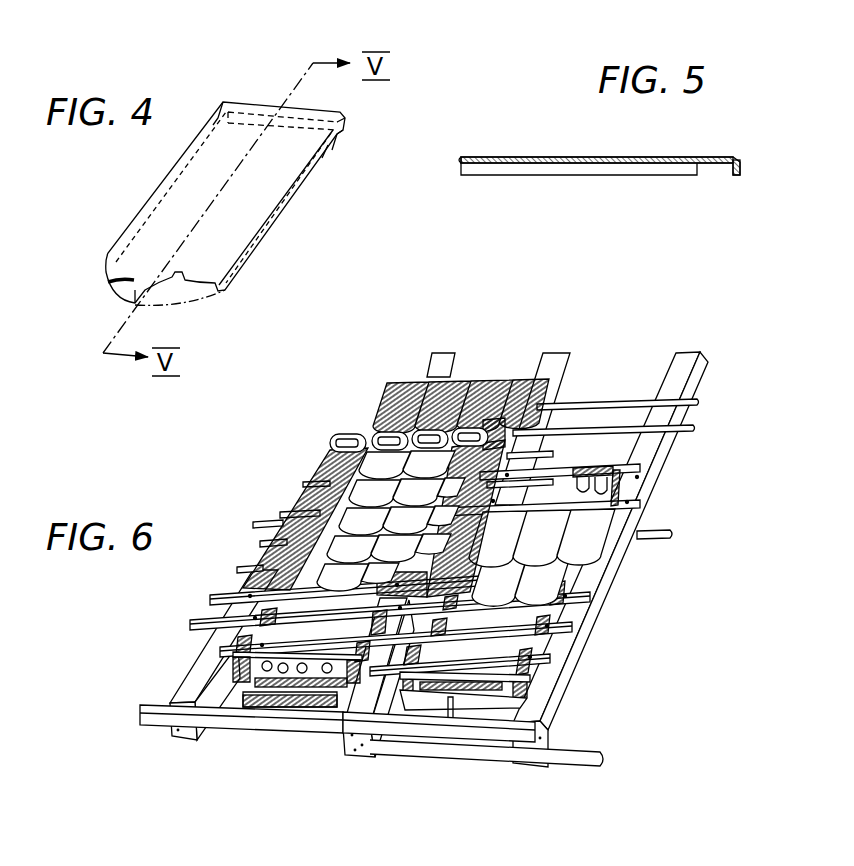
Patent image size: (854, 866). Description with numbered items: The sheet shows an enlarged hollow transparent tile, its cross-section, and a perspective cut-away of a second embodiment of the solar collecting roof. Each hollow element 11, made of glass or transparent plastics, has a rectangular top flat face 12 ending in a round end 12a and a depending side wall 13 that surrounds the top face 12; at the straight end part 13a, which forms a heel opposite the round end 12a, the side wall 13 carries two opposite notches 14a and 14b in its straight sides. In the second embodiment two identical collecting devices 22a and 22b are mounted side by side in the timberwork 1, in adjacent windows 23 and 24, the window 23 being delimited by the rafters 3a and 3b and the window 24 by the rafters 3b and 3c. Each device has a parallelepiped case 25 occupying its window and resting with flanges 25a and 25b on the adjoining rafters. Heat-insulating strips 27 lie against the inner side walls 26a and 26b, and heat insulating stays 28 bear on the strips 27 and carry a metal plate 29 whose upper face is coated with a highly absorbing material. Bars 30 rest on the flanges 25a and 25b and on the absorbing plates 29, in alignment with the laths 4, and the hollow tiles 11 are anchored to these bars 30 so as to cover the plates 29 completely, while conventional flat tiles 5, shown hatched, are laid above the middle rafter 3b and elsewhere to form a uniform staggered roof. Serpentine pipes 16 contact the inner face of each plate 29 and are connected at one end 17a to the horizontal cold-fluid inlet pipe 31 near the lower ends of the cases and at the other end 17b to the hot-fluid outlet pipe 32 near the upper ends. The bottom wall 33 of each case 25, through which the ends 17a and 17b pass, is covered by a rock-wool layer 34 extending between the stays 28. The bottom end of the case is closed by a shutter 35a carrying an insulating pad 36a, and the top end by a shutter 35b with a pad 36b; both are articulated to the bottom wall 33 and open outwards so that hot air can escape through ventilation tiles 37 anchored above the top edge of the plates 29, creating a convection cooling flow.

In FIG. 6, the timberwork 1 is at (648, 714).
In FIG. 6, the rafter 3a is at (183, 733).
In FIG. 6, the rafter 3b is at (360, 758).
In FIG. 6, the rafter 3c is at (535, 768).
In FIG. 6, the laths 4 is at (700, 435).
In FIG. 6, the flat tiles 5 is at (478, 402).
In FIG. 4, the hollow element 11 is at (296, 240).
In FIG. 5, the hollow element 11 is at (529, 146).
In FIG. 6, the hollow element 11 is at (317, 497).
In FIG. 4, the top flat face 12 is at (222, 183).
In FIG. 5, the top flat face 12 is at (602, 157).
In FIG. 4, the round end 12a is at (112, 284).
In FIG. 5, the round end 12a is at (466, 157).
In FIG. 4, the depending side wall 13 is at (252, 245).
In FIG. 5, the depending side wall 13 is at (630, 168).
In FIG. 4, the straight end part 13a is at (346, 126).
In FIG. 5, the straight end part 13a is at (737, 178).
In FIG. 4, the notch 14a is at (332, 145).
In FIG. 4, the notch 14b is at (207, 122).
In FIG. 6, the serpentine pipes 16 is at (637, 450).
In FIG. 6, the end of serpentine pipe 17a is at (410, 695).
In FIG. 6, the end of serpentine pipe 17b is at (620, 490).
In FIG. 6, the device for collecting solar energy 22a is at (283, 592).
In FIG. 6, the device for collecting solar energy 22b is at (584, 630).
In FIG. 6, the window 23 is at (276, 740).
In FIG. 6, the window 24 is at (495, 722).
In FIG. 6, the case 25 is at (230, 682).
In FIG. 6, the flange 25a is at (565, 632).
In FIG. 6, the flange 25b is at (580, 678).
In FIG. 6, the inner side wall 26a is at (233, 655).
In FIG. 6, the inner side wall 26b is at (347, 722).
In FIG. 6, the strips 27 is at (582, 602).
In FIG. 6, the heat insulating stays 28 is at (263, 668).
In FIG. 6, the metal plate 29 is at (557, 503).
In FIG. 6, the bars 30 is at (555, 662).
In FIG. 6, the inlet pipe 31 is at (600, 762).
In FIG. 6, the outlet pipe 32 is at (655, 540).
In FIG. 6, the bottom wall 33 is at (234, 688).
In FIG. 6, the plate or layer 34 is at (283, 664).
In FIG. 6, the shutter 35a is at (400, 712).
In FIG. 6, the shutter 35b is at (615, 470).
In FIG. 6, the pad 36a is at (465, 700).
In FIG. 6, the pad 36b is at (583, 468).
In FIG. 6, the ventilation tiles 37 is at (350, 436).